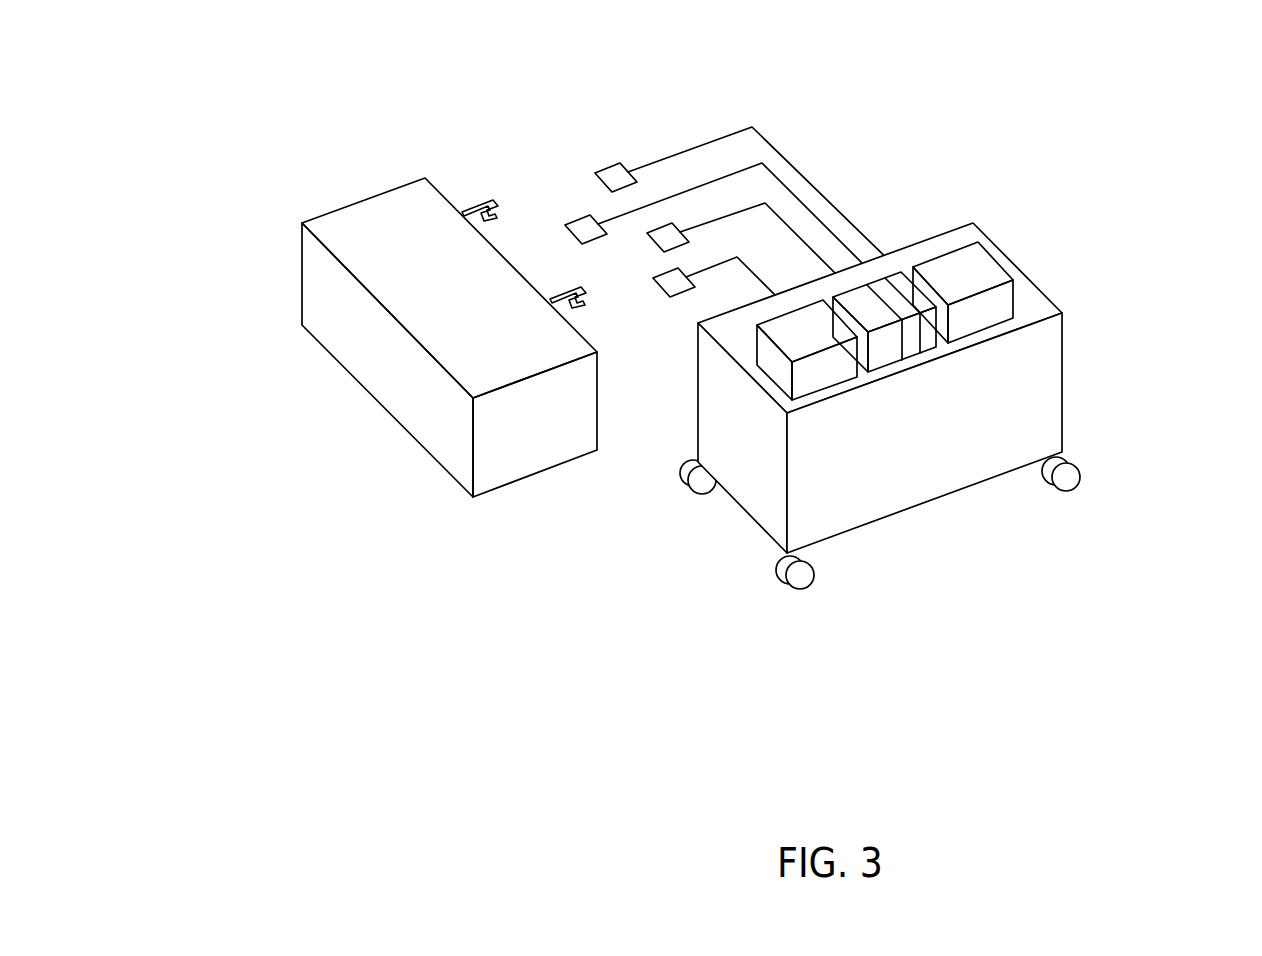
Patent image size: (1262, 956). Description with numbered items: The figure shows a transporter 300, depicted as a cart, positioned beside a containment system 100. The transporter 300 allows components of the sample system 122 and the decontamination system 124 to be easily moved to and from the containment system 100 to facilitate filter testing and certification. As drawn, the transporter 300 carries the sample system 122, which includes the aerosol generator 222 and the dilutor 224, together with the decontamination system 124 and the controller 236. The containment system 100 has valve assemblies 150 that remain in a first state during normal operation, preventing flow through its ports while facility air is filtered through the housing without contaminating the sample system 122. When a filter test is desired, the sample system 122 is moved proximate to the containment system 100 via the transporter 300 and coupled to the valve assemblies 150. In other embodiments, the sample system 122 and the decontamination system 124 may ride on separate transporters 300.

The containment system 100 is at (300, 297).
The valve assembly 150 is at (480, 200).
The transporter 300 is at (1063, 385).
The decontamination system 124 is at (818, 377).
The dilutor 224 is at (900, 280).
The sample system 122 is at (885, 357).
The aerosol generator 222 is at (912, 348).
The controller 236 is at (973, 270).